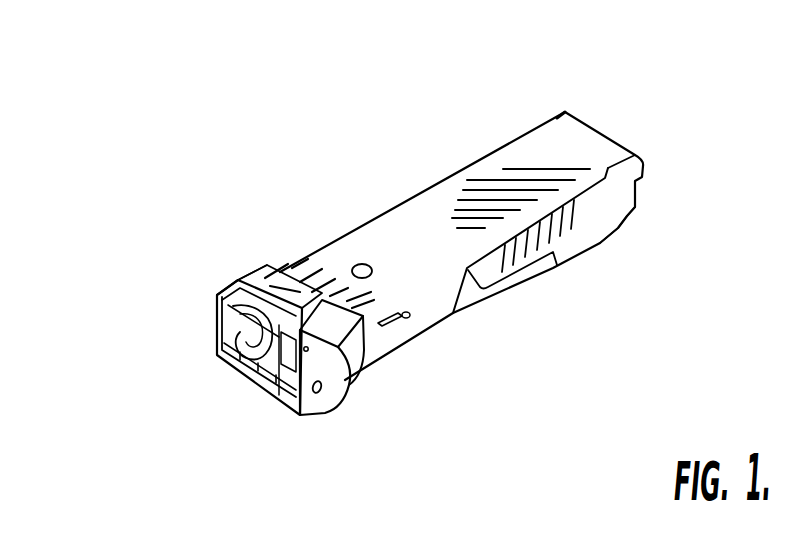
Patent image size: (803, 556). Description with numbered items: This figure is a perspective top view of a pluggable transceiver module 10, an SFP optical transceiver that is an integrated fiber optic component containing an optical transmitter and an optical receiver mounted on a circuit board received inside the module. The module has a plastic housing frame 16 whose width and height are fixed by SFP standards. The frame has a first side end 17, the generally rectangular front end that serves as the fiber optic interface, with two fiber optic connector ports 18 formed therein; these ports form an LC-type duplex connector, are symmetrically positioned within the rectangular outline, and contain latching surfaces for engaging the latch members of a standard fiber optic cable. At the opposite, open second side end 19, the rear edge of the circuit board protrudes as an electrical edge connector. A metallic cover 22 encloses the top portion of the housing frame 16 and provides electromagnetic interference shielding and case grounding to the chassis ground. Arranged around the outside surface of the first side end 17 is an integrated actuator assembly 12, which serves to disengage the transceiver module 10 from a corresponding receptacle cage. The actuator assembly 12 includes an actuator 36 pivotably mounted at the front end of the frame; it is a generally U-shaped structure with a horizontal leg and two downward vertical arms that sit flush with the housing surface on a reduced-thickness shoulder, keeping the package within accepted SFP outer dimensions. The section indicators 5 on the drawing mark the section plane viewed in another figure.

The pluggable transceiver module 10 is at (330, 180).
The actuator assembly 12 is at (234, 408).
The housing frame 16 is at (620, 215).
The first side end 17 is at (259, 254).
The fiber optic connector ports 18 is at (217, 345).
The second side end 19 is at (603, 147).
The metallic cover 22 is at (488, 190).
The actuator 36 is at (334, 352).
The section line 5- 5 is at (365, 268).